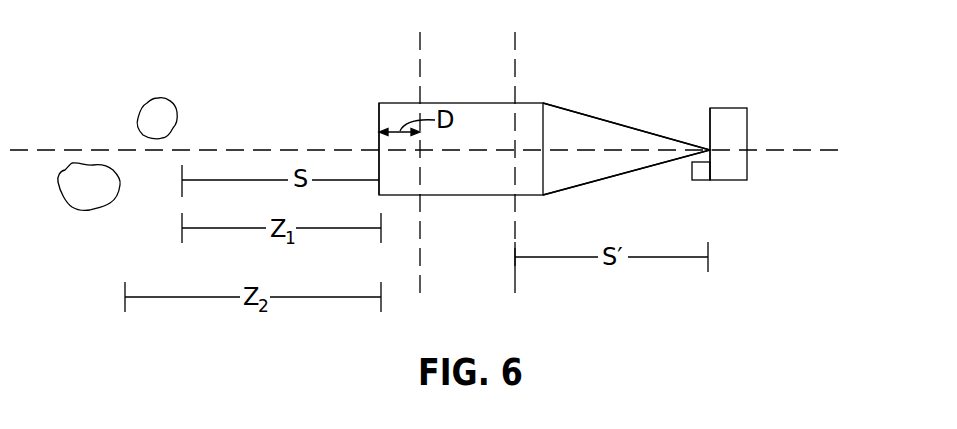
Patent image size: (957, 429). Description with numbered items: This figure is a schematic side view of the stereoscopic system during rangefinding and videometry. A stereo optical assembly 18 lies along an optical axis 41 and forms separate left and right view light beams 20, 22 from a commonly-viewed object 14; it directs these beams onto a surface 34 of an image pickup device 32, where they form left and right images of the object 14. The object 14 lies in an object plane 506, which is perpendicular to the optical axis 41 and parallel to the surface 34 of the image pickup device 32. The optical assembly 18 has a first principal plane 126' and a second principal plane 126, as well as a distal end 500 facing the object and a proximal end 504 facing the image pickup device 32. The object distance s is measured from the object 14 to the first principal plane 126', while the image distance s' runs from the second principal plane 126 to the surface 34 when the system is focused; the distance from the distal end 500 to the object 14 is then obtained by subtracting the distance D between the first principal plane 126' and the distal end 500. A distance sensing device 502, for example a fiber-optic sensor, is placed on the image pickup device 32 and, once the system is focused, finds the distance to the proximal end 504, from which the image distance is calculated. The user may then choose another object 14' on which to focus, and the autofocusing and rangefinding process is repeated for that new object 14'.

The object 14 is at (175, 98).
The another object 14' is at (80, 211).
The object plane 506 is at (196, 115).
The stereo optical assembly 18 is at (460, 197).
The distal end 500 is at (379, 120).
The first principal plane 126' is at (385, 149).
The second principal plane 126 is at (553, 165).
The proximal end 504 is at (545, 120).
The left view light beam 20 is at (642, 128).
The right view light beam 22 is at (615, 177).
The image pickup device 32 is at (728, 108).
The surface 34 is at (709, 118).
The distance sensing device 502 is at (700, 180).
The optical axis 41 is at (800, 148).